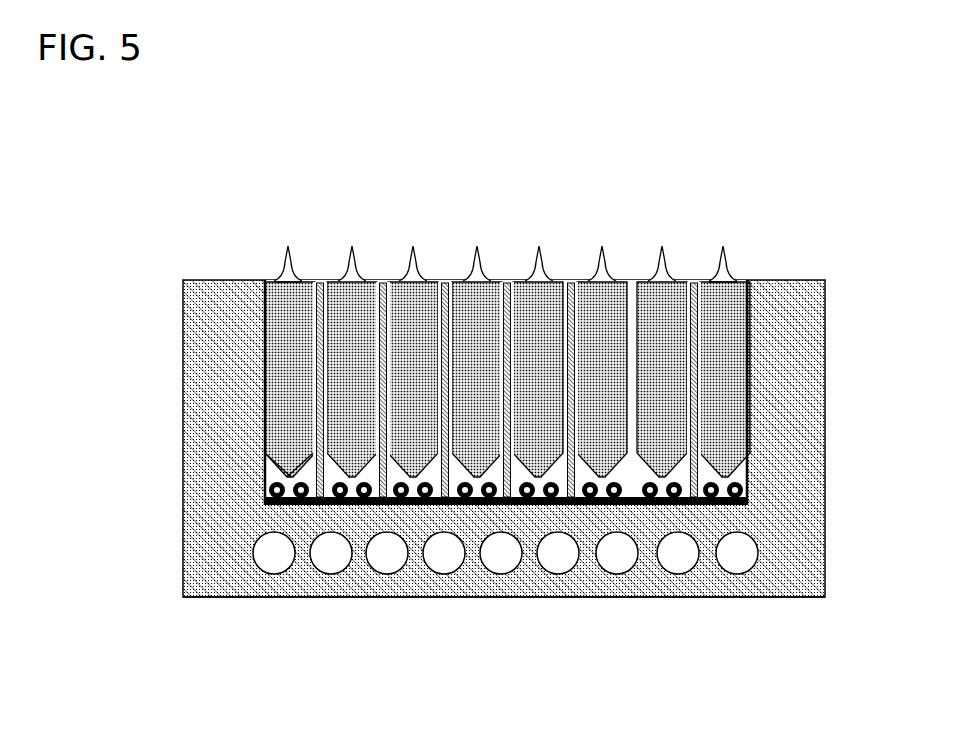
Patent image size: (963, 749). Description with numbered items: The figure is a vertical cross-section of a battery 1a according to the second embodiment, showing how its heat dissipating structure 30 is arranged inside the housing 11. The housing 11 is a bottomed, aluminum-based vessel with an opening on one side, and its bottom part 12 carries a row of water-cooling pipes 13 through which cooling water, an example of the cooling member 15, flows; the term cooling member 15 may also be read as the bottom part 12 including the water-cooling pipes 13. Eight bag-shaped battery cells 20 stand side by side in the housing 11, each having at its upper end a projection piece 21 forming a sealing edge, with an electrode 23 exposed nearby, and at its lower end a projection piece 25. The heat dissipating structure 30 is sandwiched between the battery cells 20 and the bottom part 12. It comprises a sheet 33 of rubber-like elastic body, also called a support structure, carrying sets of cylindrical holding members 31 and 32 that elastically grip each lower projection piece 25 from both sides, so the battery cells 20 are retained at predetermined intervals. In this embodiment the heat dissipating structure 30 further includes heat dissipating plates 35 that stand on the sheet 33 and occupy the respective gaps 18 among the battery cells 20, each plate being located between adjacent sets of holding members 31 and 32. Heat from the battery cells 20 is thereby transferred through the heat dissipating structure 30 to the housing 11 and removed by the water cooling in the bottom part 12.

The battery 1a is at (895, 239).
The housing 11 is at (806, 407).
The bottom part 12 is at (786, 585).
The water-cooling pipes 13 is at (505, 626).
The cooling member 15 is at (505, 626).
The gaps 18 is at (569, 283).
The battery cells 20 is at (737, 331).
The projection piece 21 is at (726, 272).
The electrode 23 is at (726, 246).
The projection piece 25 is at (738, 484).
The heat dissipating structure 30 is at (256, 491).
The holding member 31 is at (268, 478).
The holding member 32 is at (298, 466).
The sheet 33 is at (708, 504).
The heat dissipating plates 35 is at (693, 283).